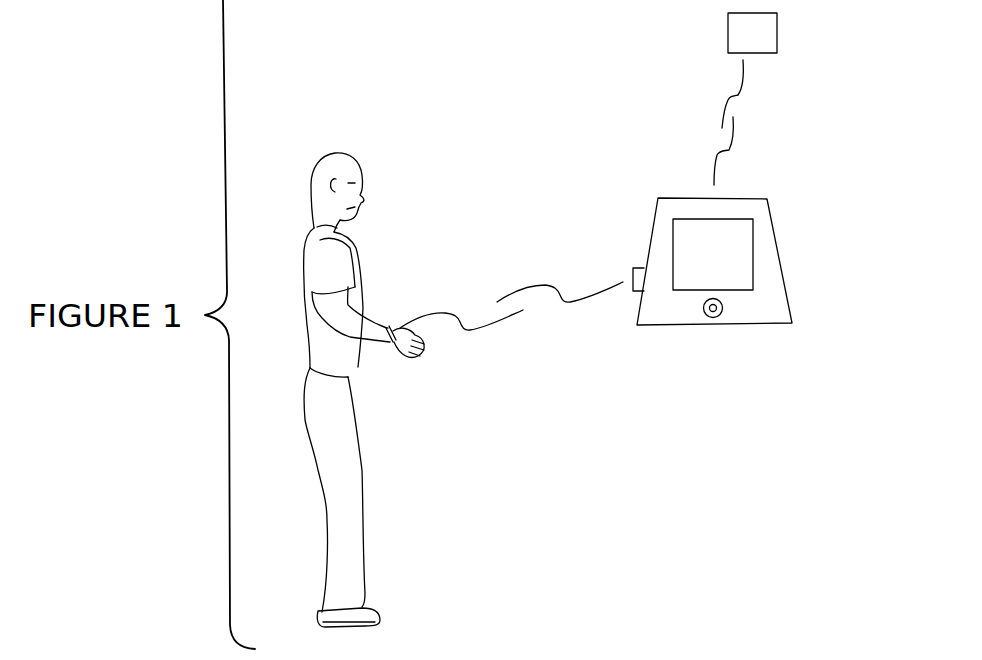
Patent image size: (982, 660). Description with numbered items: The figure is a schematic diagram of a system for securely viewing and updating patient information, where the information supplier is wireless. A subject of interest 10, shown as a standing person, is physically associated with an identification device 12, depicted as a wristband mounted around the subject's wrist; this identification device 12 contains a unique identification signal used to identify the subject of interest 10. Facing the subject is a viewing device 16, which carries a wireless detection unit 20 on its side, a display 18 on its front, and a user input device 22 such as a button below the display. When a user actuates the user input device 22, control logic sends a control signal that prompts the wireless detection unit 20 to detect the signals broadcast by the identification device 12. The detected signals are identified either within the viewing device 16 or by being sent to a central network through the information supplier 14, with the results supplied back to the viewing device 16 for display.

The subject of interest 10 is at (359, 358).
The identification device 12 is at (397, 318).
The information supplier 14 is at (772, 63).
The viewing device 16 is at (711, 263).
The display 18 is at (748, 246).
The wireless detection unit 20 is at (624, 271).
The user input device 22 is at (690, 312).